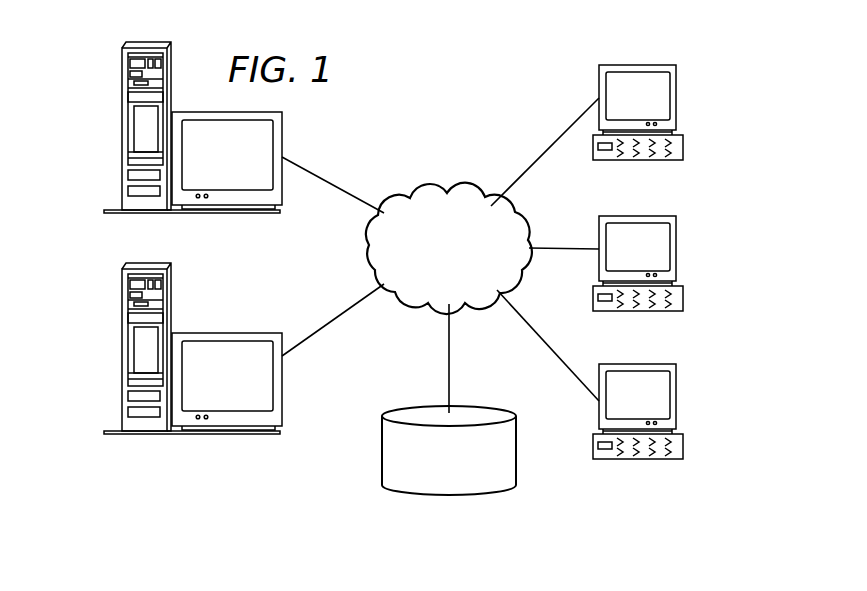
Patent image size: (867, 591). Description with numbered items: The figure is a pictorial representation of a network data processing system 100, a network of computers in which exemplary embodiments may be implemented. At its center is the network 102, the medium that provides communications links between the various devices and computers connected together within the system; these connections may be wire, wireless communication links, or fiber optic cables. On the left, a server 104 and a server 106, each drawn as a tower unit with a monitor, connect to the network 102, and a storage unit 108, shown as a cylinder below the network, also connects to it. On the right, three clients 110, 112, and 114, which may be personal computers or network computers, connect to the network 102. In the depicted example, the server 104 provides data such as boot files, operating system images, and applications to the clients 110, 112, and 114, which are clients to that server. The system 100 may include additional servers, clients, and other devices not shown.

The network data processing system 100 is at (503, 79).
The network 102 is at (418, 196).
The server 104 is at (122, 130).
The server 106 is at (122, 352).
The storage unit 108 is at (430, 496).
The client 110 is at (677, 97).
The client 112 is at (677, 248).
The client 114 is at (677, 397).